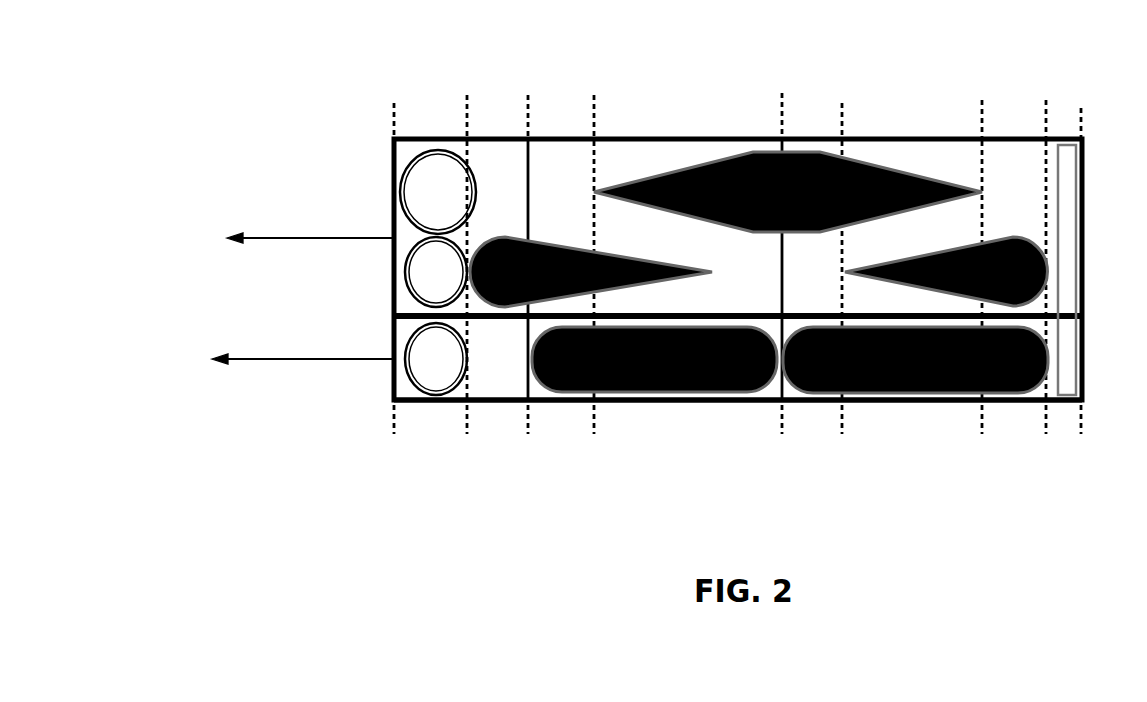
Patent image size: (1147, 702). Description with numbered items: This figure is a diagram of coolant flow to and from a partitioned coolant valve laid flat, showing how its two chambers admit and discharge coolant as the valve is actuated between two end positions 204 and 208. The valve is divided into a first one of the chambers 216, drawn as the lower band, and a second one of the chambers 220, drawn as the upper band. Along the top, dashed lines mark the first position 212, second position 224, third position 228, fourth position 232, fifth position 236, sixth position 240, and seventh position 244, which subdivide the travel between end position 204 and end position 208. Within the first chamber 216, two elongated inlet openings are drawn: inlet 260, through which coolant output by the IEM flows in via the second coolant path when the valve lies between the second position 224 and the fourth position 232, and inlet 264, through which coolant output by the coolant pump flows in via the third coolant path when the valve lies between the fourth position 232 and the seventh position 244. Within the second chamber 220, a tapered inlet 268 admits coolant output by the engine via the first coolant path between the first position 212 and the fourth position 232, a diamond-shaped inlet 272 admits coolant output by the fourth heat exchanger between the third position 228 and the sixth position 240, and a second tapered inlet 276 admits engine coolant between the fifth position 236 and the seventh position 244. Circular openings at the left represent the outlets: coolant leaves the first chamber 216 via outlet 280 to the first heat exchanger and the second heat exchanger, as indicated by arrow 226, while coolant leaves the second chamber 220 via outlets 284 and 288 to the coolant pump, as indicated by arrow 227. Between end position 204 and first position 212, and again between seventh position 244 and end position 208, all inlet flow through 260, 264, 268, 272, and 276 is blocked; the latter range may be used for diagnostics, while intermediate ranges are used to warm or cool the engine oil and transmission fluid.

The end position 204 is at (394, 103).
The end position 208 is at (1083, 108).
The first position 212 is at (467, 95).
The first one of the chambers 216 is at (707, 402).
The second one of the chambers 220 is at (703, 138).
The second position 224 is at (528, 95).
The coolant output indication 226 is at (288, 362).
The coolant output indication 227 is at (304, 240).
The third position 228 is at (593, 95).
The fourth position 232 is at (782, 93).
The fifth position 236 is at (842, 103).
The sixth position 240 is at (982, 100).
The seventh position 244 is at (1046, 100).
The first chamber inlet from IEM 260 is at (628, 385).
The first chamber inlet from coolant pump 264 is at (918, 385).
The second chamber inlet from engine 268 is at (606, 254).
The second chamber inlet from fourth heat exchanger 272 is at (693, 217).
The second chamber inlet from engine 276 is at (942, 253).
The first chamber outlet 280 is at (435, 390).
The second chamber outlet 284 is at (399, 192).
The second chamber outlet 288 is at (408, 287).